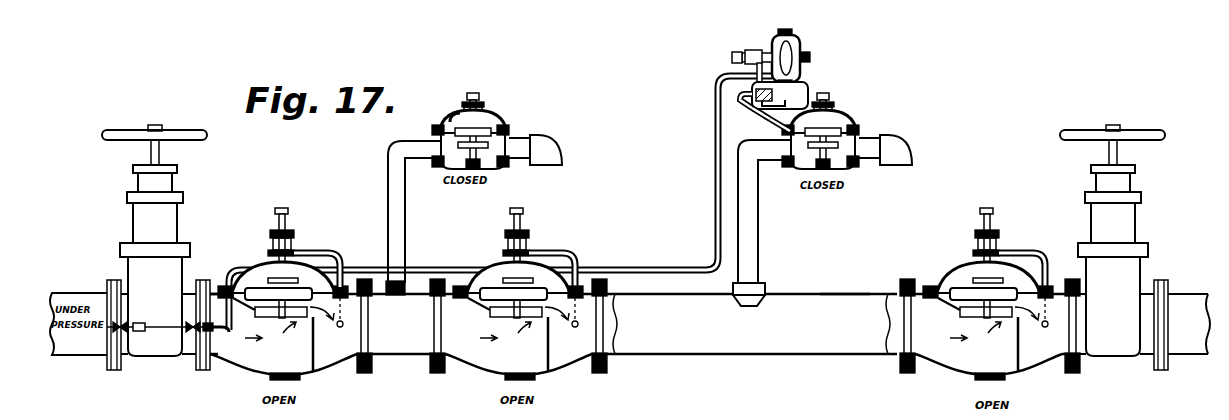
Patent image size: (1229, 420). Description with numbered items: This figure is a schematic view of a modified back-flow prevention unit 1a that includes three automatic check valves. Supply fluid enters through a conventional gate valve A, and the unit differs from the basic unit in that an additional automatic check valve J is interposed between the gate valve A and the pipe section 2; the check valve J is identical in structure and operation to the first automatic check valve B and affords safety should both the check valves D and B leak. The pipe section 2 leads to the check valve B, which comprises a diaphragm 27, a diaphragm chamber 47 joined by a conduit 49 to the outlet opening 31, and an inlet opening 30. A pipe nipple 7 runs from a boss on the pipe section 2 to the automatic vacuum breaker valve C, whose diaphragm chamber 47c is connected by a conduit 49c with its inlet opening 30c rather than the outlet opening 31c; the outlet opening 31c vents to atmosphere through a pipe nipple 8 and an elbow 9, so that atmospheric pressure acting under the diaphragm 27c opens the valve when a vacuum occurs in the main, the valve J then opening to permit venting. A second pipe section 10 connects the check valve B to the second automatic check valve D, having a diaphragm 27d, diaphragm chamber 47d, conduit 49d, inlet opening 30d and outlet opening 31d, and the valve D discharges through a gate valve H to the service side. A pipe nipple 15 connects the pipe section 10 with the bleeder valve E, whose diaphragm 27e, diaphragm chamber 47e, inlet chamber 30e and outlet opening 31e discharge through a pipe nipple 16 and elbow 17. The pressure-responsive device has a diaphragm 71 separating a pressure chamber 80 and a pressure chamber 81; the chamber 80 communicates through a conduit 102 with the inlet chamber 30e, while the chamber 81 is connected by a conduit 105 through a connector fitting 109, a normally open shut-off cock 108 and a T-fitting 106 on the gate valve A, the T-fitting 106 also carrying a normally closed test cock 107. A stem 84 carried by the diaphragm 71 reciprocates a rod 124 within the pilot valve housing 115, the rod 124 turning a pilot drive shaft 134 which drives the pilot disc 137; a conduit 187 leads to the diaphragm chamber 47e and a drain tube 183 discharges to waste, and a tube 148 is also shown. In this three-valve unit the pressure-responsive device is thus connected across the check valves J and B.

The gate valve A is at (178, 227).
The gate valve H is at (1133, 228).
The automatic check valve J is at (282, 207).
The first automatic check valve B is at (530, 213).
The automatic vacuum breaker valve C is at (491, 111).
The second automatic check valve D is at (997, 204).
The bleeder valve E is at (839, 103).
The T-fitting 106 is at (141, 324).
The test cock 107 is at (110, 330).
The shut-off cock 108 is at (190, 336).
The connector fitting 109 is at (210, 336).
The pipe section 2 is at (409, 350).
The pipe nipple 7 is at (406, 231).
The pipe nipple 8 is at (531, 140).
The elbow 9 is at (564, 151).
The second pipe section 10 is at (809, 345).
The back-flow prevention unit 1a is at (845, 291).
The pipe nipple 15 is at (758, 242).
The pipe nipple 16 is at (886, 135).
The elbow 17 is at (911, 155).
The diaphragm 27 is at (475, 272).
The diaphragm chamber 47 is at (497, 268).
The conduit 49 is at (578, 253).
The inlet opening 30 is at (481, 364).
The outlet opening 31 is at (586, 356).
The diaphragm 27c is at (434, 129).
The diaphragm chamber 47c is at (503, 121).
The conduit 49c is at (452, 114).
The inlet opening 30c is at (452, 174).
The outlet opening 31c is at (500, 165).
The diaphragm 27d is at (934, 284).
The diaphragm chamber 47d is at (967, 266).
The conduit 49d is at (1045, 251).
The inlet opening 30d is at (951, 360).
The outlet opening 31d is at (1060, 354).
The diaphragm 27e is at (860, 126).
The diaphragm chamber 47e is at (841, 115).
The inlet chamber 30e is at (802, 176).
The outlet opening 31e is at (855, 170).
The conduit 105 is at (651, 266).
The pilot drive shaft 134 is at (745, 72).
The pressure chamber 80 is at (797, 35).
The diaphragm 71 is at (786, 31).
The pressure chamber 81 is at (760, 62).
The stem 84 is at (811, 55).
The pilot valve housing 115 is at (751, 51).
The rod 124 is at (735, 55).
The conduit 102 is at (810, 90).
The drain tube 183 is at (780, 97).
The pilot disc 137 is at (738, 92).
The conduit 187 is at (752, 104).
The tube 148 is at (762, 116).